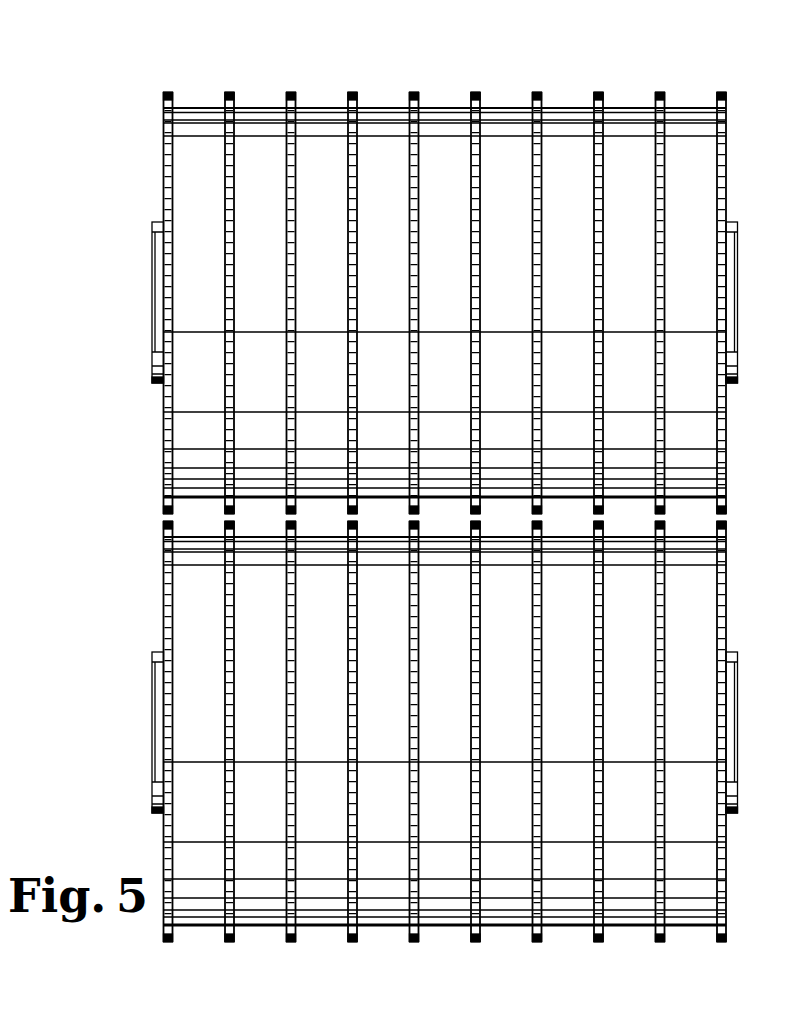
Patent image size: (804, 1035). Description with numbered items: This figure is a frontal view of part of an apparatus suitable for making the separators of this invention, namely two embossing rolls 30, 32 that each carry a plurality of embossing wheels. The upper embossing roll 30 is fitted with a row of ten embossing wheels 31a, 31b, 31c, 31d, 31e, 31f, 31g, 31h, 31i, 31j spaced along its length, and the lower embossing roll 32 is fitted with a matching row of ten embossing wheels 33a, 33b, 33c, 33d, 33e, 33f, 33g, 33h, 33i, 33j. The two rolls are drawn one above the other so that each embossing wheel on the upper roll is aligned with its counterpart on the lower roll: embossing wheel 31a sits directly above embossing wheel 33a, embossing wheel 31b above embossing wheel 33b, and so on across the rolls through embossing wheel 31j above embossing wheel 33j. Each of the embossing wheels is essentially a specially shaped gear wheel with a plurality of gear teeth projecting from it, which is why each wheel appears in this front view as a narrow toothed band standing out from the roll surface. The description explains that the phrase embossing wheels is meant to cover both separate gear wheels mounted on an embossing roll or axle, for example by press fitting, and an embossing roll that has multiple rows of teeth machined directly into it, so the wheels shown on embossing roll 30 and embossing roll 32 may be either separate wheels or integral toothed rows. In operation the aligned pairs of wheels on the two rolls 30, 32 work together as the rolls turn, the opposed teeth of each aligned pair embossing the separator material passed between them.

The embossing roll 30 is at (126, 197).
The embossing roll 32 is at (123, 622).
The embossing wheel 31a is at (167, 91).
The embossing wheel 31b is at (228, 91).
The embossing wheel 31c is at (290, 91).
The embossing wheel 31d is at (351, 91).
The embossing wheel 31e is at (413, 91).
The embossing wheel 31f is at (476, 91).
The embossing wheel 31g is at (538, 91).
The embossing wheel 31h is at (598, 91).
The embossing wheel 31i is at (659, 91).
The embossing wheel 31j is at (721, 91).
The embossing wheel 33a is at (167, 943).
The embossing wheel 33b is at (228, 943).
The embossing wheel 33c is at (290, 943).
The embossing wheel 33d is at (351, 943).
The embossing wheel 33e is at (413, 943).
The embossing wheel 33f is at (475, 943).
The embossing wheel 33g is at (537, 943).
The embossing wheel 33h is at (598, 943).
The embossing wheel 33i is at (659, 943).
The embossing wheel 33j is at (721, 943).